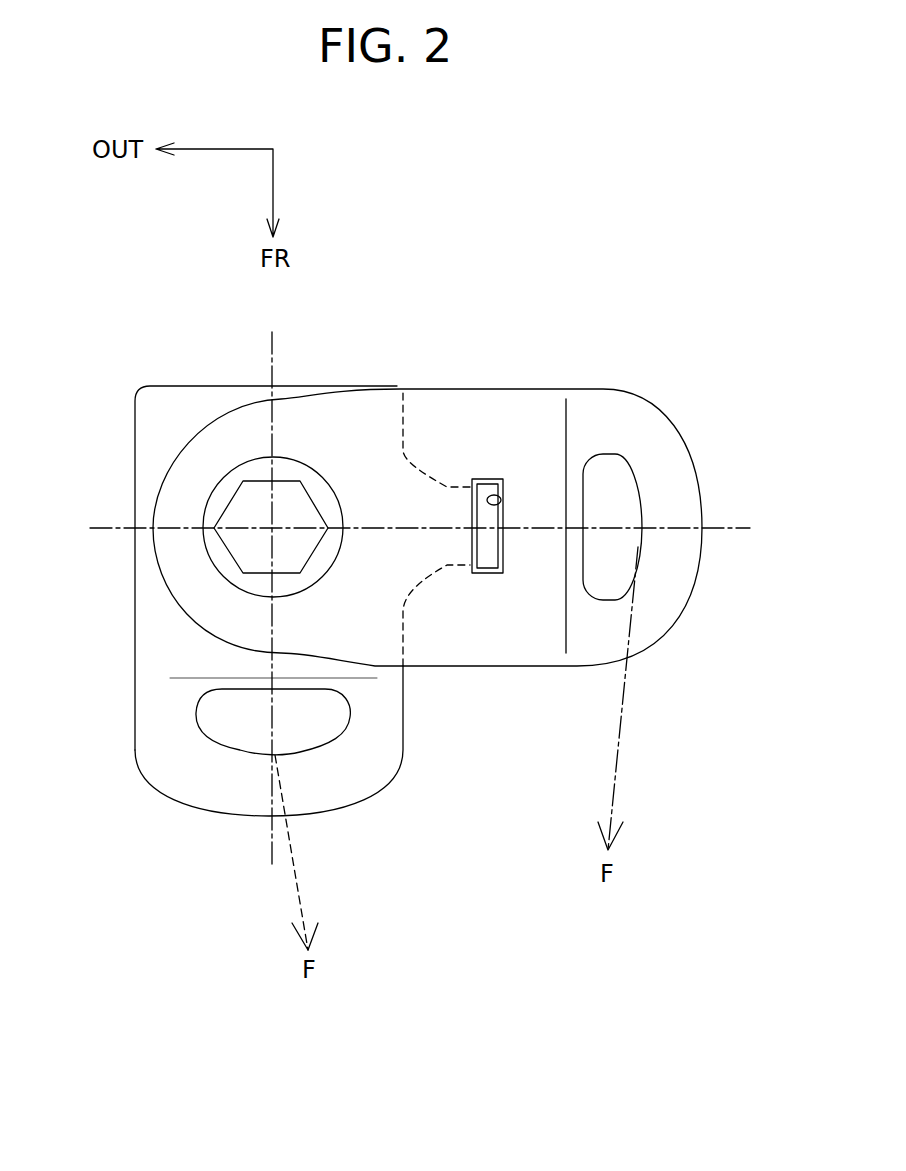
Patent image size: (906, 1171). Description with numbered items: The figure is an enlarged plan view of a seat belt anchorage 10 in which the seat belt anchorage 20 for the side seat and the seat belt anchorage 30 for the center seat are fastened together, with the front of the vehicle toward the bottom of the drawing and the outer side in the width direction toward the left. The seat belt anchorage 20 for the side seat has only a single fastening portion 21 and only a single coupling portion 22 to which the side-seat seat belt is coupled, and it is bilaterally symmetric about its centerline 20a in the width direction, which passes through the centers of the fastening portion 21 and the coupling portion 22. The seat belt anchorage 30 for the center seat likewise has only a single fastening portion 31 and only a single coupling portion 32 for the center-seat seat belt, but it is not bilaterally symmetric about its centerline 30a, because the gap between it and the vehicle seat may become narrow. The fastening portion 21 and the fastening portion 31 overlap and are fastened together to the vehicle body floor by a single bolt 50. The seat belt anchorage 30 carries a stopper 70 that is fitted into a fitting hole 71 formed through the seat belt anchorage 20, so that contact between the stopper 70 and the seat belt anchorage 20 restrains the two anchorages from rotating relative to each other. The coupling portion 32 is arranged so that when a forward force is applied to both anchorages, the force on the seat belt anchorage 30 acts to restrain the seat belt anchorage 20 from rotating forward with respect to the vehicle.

The seat belt anchorage 10 is at (485, 405).
The seat belt anchorage for the side seat 20 is at (537, 405).
The centerline 20a is at (723, 530).
The fastening portion 21 is at (312, 472).
The coupling portion 22 is at (638, 500).
The seat belt anchorage for the center seat 30 is at (147, 747).
The centerline 30a is at (273, 840).
The fastening portion 31 is at (218, 478).
The coupling portion 32 is at (328, 743).
The bolt 50 is at (305, 547).
The stopper 70 is at (492, 533).
The fitting hole 71 is at (502, 508).